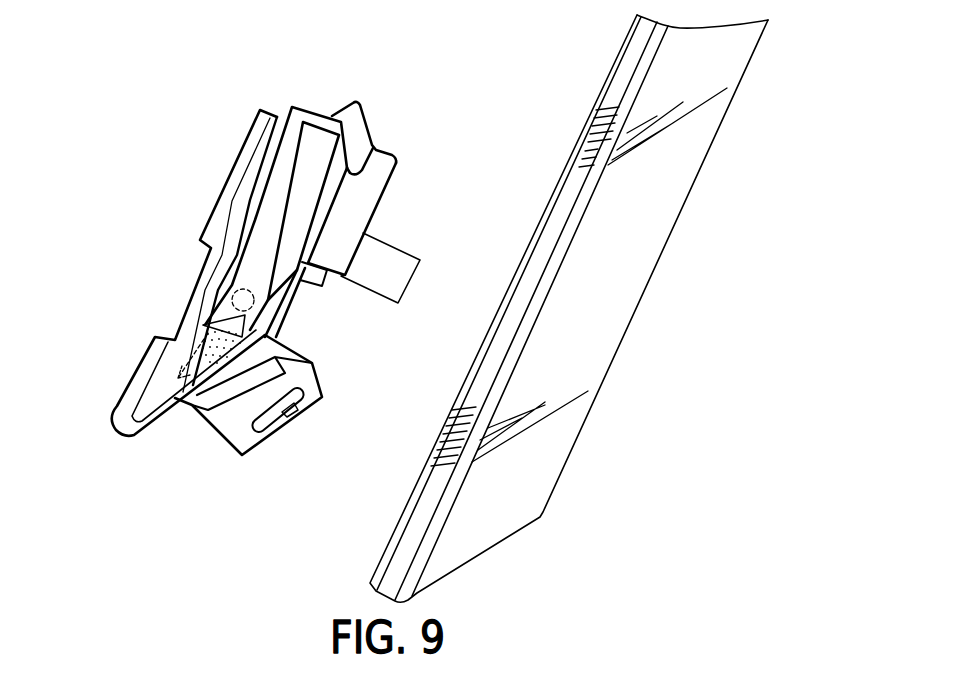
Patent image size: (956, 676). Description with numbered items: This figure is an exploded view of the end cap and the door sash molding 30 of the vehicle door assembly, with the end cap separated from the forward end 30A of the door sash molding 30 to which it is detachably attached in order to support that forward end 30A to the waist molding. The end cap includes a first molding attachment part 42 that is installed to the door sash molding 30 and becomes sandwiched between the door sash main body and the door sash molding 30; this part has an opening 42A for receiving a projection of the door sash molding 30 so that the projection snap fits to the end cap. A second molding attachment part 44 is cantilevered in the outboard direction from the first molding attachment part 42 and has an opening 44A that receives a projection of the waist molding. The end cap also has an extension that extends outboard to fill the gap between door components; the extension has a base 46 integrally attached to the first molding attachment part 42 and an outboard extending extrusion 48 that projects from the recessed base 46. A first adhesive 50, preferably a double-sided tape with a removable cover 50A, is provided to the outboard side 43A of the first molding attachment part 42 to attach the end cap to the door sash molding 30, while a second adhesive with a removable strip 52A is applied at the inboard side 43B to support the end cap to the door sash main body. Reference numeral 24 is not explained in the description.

The clip assembly 24 is at (120, 220).
The door sash molding 30 is at (626, 251).
The forward end 30A is at (590, 84).
The first molding attachment part 42 is at (222, 172).
The opening 42A is at (232, 301).
The outboard side 43A is at (193, 328).
The inboard side 43B is at (214, 268).
The second molding attachment part 44 is at (257, 482).
The opening 44A is at (288, 408).
The base 46 is at (360, 141).
The extrusion 48 is at (353, 199).
The first adhesive 50 is at (182, 356).
The cover 50A is at (244, 323).
The removable strip 52A is at (397, 247).